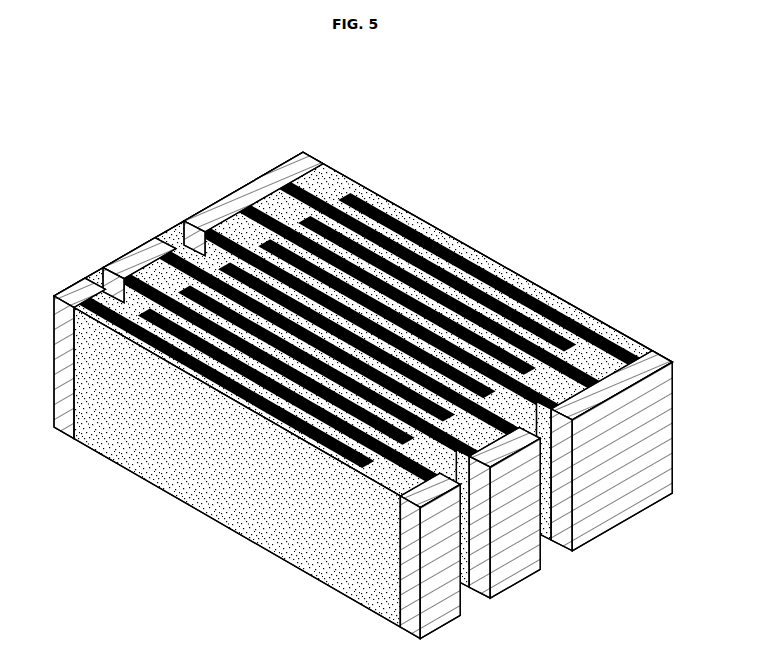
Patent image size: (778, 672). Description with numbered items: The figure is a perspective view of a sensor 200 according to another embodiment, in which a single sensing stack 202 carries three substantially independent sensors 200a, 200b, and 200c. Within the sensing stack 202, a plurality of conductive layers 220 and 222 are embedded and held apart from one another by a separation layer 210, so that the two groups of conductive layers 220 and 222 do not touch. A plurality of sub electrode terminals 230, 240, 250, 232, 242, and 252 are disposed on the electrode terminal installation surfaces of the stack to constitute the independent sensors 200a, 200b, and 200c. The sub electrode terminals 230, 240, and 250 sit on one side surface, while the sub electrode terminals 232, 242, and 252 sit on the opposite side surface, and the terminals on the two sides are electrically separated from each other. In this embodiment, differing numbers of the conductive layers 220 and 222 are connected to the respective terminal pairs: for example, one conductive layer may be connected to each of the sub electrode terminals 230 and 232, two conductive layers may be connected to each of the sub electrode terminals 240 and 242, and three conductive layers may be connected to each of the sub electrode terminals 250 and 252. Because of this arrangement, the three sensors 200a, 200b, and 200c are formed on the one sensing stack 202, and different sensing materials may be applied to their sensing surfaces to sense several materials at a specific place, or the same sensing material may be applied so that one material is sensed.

The sensor 200 is at (142, 66).
The independent sensor 200a is at (73, 258).
The independent sensor 200b is at (140, 226).
The independent sensor 200c is at (270, 148).
The sensing stack 202 is at (215, 550).
The separation layer 210 is at (413, 207).
The conductive layer 220 is at (330, 188).
The conductive layer 222 is at (606, 330).
The sub electrode terminal 230 is at (70, 290).
The sub electrode terminal 232 is at (440, 602).
The sub electrode terminal 240 is at (130, 262).
The sub electrode terminal 242 is at (520, 568).
The sub electrode terminal 250 is at (262, 190).
The sub electrode terminal 252 is at (632, 512).